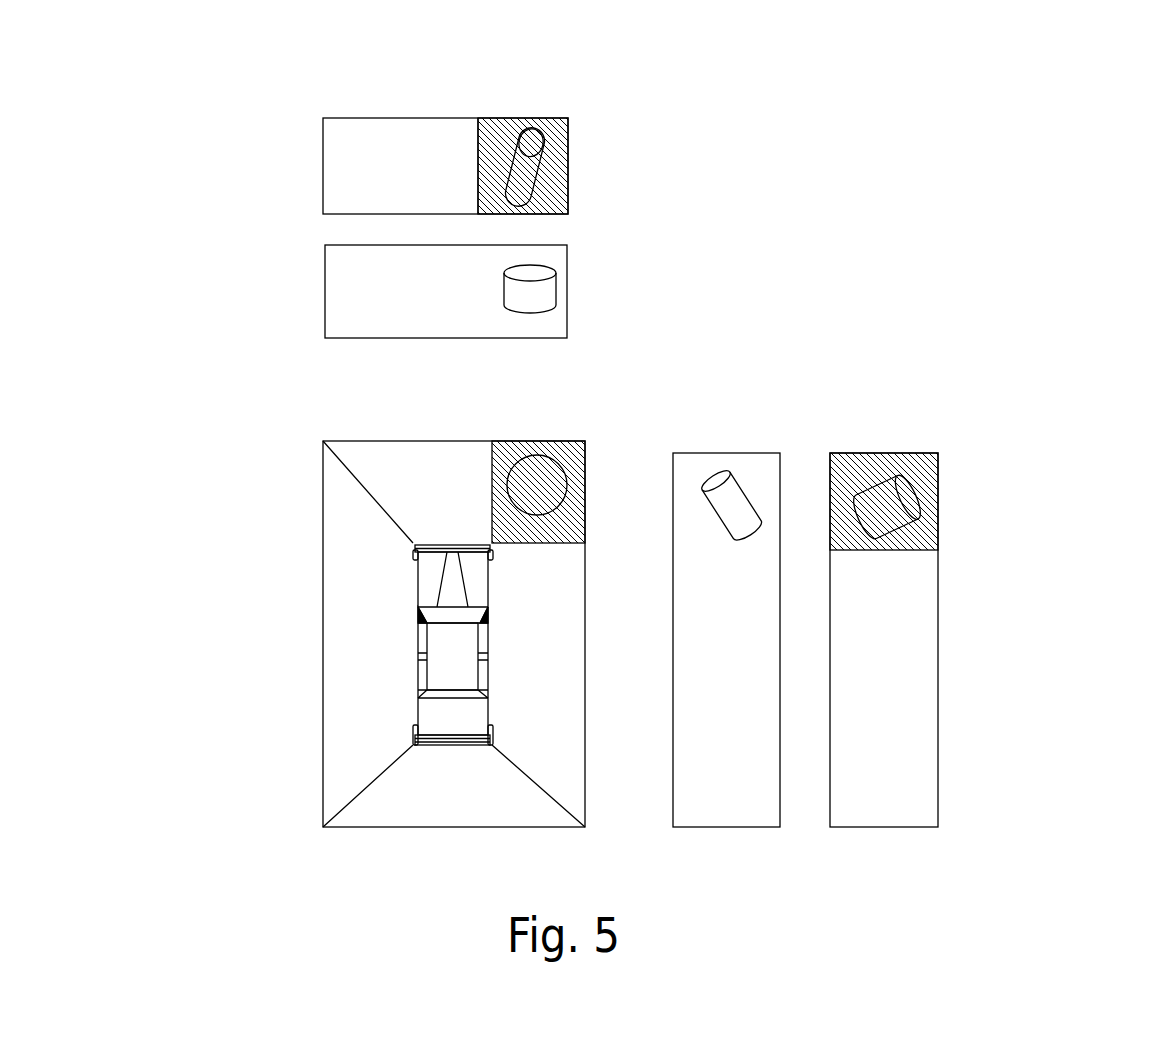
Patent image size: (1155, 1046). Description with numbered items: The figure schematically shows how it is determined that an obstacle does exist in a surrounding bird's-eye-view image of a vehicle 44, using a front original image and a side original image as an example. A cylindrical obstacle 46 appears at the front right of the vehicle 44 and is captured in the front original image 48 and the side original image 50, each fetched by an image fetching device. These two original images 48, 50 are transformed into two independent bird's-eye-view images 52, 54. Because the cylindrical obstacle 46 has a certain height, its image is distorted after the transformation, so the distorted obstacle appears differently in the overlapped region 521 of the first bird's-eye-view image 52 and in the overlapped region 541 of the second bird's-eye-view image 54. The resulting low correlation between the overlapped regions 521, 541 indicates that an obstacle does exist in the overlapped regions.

The vehicle 44 is at (415, 650).
The cylindrical obstacle 46 is at (511, 147).
The front original image 48 is at (368, 338).
The side original image 50 is at (737, 827).
The bird's-eye-view image 52 is at (322, 150).
The overlapped region 521 is at (568, 178).
The bird's-eye-view image 54 is at (902, 827).
The overlapped region 541 is at (921, 453).